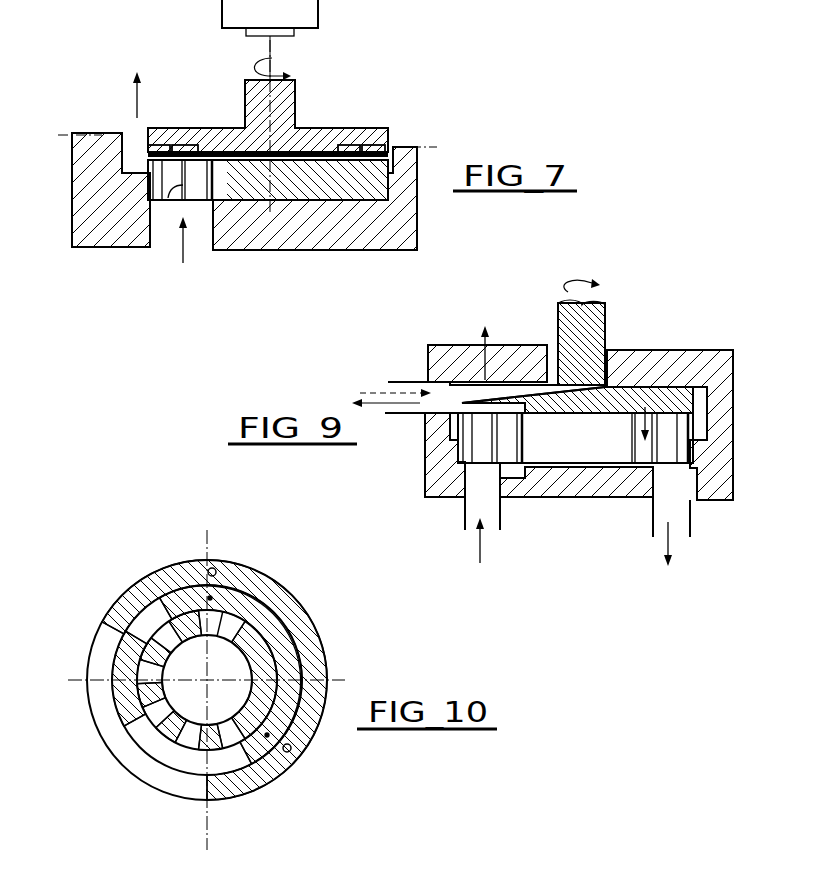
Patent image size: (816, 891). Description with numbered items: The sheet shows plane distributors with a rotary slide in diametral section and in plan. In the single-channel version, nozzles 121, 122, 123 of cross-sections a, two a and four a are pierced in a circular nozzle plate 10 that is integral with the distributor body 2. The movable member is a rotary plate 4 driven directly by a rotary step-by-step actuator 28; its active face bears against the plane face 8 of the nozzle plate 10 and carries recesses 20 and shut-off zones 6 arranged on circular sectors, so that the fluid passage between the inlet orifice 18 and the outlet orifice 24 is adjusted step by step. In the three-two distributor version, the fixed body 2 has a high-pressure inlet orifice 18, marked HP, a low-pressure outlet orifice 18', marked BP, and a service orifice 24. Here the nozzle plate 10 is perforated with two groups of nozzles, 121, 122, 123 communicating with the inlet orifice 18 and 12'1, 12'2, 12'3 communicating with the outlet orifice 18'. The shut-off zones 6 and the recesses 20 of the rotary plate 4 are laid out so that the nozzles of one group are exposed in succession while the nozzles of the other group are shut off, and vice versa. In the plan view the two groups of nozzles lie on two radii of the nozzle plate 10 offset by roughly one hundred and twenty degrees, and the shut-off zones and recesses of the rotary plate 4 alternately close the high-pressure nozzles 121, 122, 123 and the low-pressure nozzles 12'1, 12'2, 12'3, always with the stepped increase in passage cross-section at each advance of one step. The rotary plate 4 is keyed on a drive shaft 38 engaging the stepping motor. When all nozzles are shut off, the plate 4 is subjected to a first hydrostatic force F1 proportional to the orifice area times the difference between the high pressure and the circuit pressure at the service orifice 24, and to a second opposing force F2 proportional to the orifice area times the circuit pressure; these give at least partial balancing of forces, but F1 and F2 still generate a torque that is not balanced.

In FIG. 7, the distributor body 2 is at (112, 225).
In FIG. 9, the distributor body 2 is at (418, 480).
In FIG. 7, the rotary plate 4 is at (337, 118).
In FIG. 9, the rotary plate 4 is at (657, 403).
In FIG. 7, the shut-off zones 6 is at (222, 148).
In FIG. 9, the shut-off zones 6 is at (686, 406).
In FIG. 7, the plane face 8 is at (323, 188).
In FIG. 9, the plane face 8 is at (575, 445).
In FIG. 7, the nozzle plate 10 is at (367, 192).
In FIG. 9, the nozzle plate 10 is at (553, 448).
In FIG. 10, the nozzle plate 10 is at (308, 594).
In FIG. 7, the inlet orifice 18 is at (204, 248).
In FIG. 9, the inlet orifice 18 is at (462, 544).
In FIG. 9, the outlet orifice 18' is at (708, 530).
In FIG. 9, the recesses 20 is at (450, 440).
In FIG. 7, the service orifice 24 is at (137, 136).
In FIG. 9, the service orifice 24 is at (443, 400).
In FIG. 7, the rotary step-by-step actuator 28 is at (313, 13).
In FIG. 9, the drive shaft 38 is at (606, 323).
In FIG. 7, the nozzle 121 is at (227, 163).
In FIG. 9, the nozzle 121 is at (522, 438).
In FIG. 10, the nozzle 121 is at (232, 598).
In FIG. 7, the nozzle 122 is at (165, 182).
In FIG. 9, the nozzle 122 is at (497, 447).
In FIG. 10, the nozzle 122 is at (227, 580).
In FIG. 7, the nozzle 123 is at (150, 185).
In FIG. 9, the nozzle 123 is at (462, 445).
In FIG. 10, the nozzle 123 is at (205, 560).
In FIG. 9, the nozzle 12'1 is at (727, 469).
In FIG. 10, the nozzle 12'1 is at (345, 756).
In FIG. 9, the nozzle 12'2 is at (728, 449).
In FIG. 10, the nozzle 12'2 is at (292, 802).
In FIG. 9, the nozzle 12'3 is at (714, 438).
In FIG. 10, the nozzle 12'3 is at (338, 800).
In FIG. 9, the first hydrostatic force F1 is at (485, 362).
In FIG. 9, the second opposing force F2 is at (630, 420).
In FIG. 9, the high pressure port HP is at (480, 554).
In FIG. 10, the high pressure port HP is at (207, 562).
In FIG. 9, the low pressure port BP is at (673, 559).
In FIG. 10, the low pressure port BP is at (292, 753).